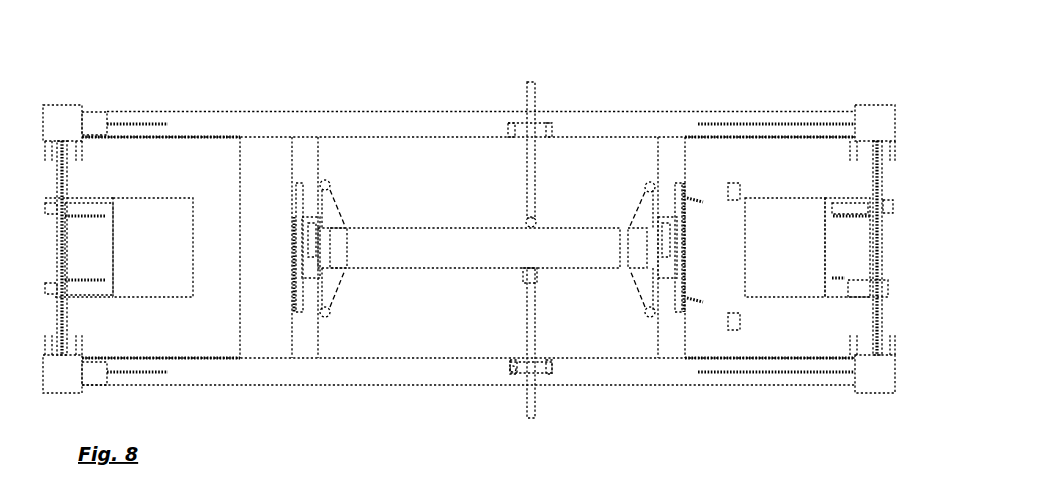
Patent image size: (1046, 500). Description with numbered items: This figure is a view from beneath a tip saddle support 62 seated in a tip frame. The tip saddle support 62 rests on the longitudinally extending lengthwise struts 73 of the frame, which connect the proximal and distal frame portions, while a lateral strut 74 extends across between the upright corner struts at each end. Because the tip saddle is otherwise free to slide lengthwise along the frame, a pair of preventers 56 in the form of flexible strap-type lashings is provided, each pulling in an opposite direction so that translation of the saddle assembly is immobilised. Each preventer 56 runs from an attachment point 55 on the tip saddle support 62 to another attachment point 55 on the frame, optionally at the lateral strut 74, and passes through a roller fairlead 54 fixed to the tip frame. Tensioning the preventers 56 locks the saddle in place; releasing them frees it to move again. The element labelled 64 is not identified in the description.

The lateral strut 74 is at (212, 125).
The lengthwise strut 73 is at (672, 157).
The tip saddle support 62 is at (583, 243).
The attachment point 55 is at (525, 222).
The fairlead 54 is at (512, 370).
The preventer 56 is at (532, 408).
The upper rod 64 is at (583, 0).